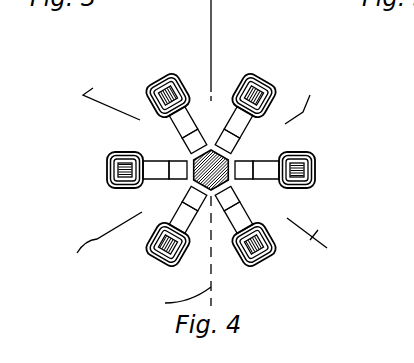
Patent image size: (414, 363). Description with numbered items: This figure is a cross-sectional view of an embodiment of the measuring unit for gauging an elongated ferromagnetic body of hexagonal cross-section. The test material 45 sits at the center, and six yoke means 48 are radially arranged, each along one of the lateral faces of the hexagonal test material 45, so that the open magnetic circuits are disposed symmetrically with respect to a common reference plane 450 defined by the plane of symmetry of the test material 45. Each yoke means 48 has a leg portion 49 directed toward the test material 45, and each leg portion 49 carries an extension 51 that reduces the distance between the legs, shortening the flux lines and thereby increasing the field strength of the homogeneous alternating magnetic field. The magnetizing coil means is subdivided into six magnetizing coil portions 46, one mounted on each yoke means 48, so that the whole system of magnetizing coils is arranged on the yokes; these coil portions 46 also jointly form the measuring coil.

The test material 45 is at (211, 150).
The magnetizing coil portions 46 is at (314, 161).
The yoke means 48 is at (311, 181).
The leg portions 49 is at (264, 161).
The extensions 51 is at (240, 179).
The common reference plane 450 is at (215, 18).